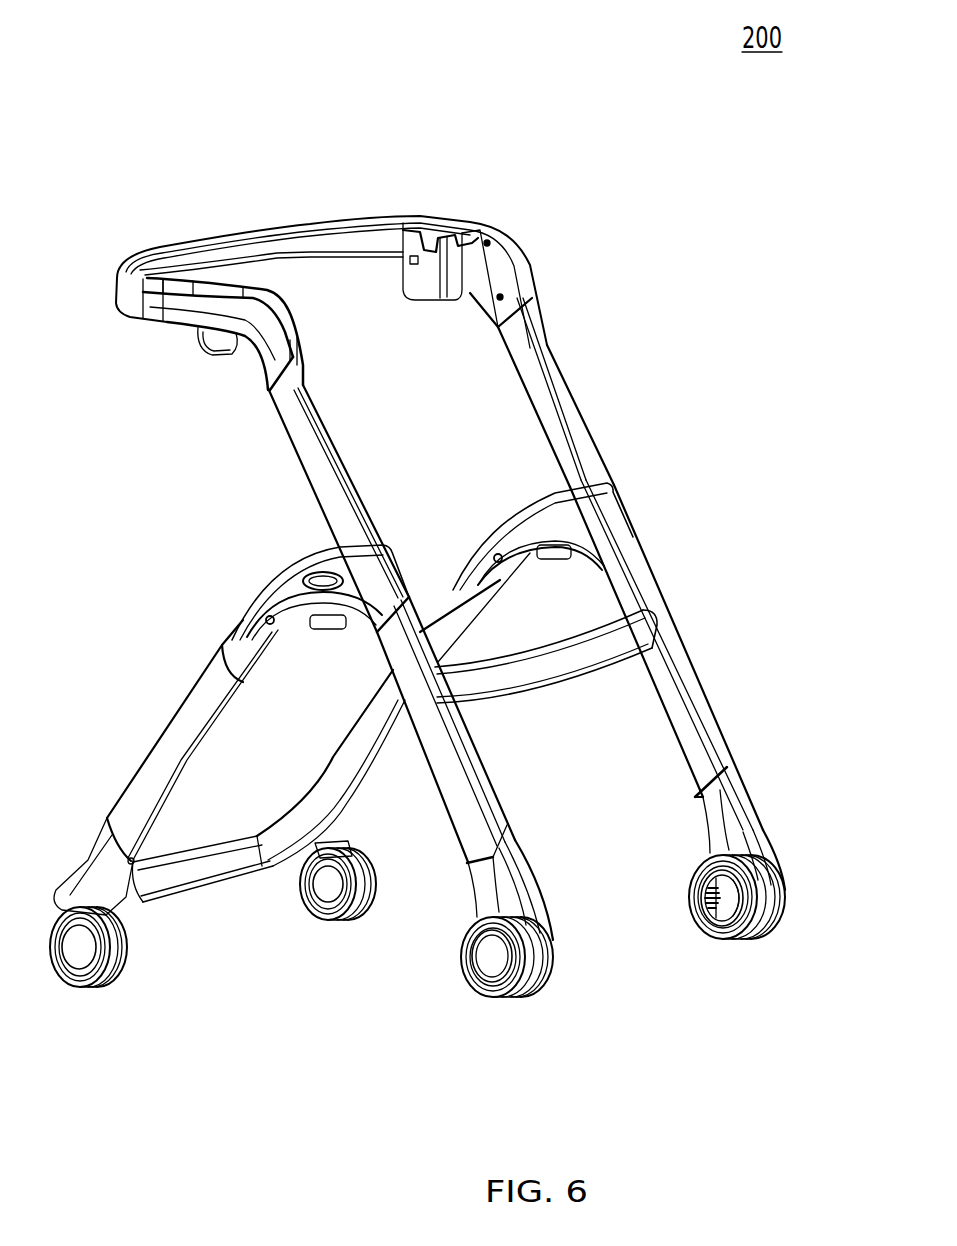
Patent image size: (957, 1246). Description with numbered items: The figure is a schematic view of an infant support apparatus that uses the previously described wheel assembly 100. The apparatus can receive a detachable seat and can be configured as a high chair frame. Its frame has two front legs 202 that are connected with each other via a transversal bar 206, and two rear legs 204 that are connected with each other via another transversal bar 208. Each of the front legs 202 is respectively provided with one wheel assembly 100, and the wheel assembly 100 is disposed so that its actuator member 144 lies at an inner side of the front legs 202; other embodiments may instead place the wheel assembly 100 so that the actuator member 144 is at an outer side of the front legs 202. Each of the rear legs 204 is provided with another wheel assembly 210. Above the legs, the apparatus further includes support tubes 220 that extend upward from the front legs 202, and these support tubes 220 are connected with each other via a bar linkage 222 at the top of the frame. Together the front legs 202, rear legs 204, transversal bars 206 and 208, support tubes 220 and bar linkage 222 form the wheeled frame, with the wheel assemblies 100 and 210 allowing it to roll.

The bar linkage 222 is at (242, 247).
The support tubes 220 is at (322, 458).
The front legs 202 is at (455, 757).
The rear legs 204 is at (175, 745).
The transversal bar 206 is at (565, 667).
The transversal bar 208 is at (207, 862).
The wheel assembly 210 is at (293, 936).
The wheel assembly 100 is at (580, 985).
The actuator member 144 is at (708, 932).